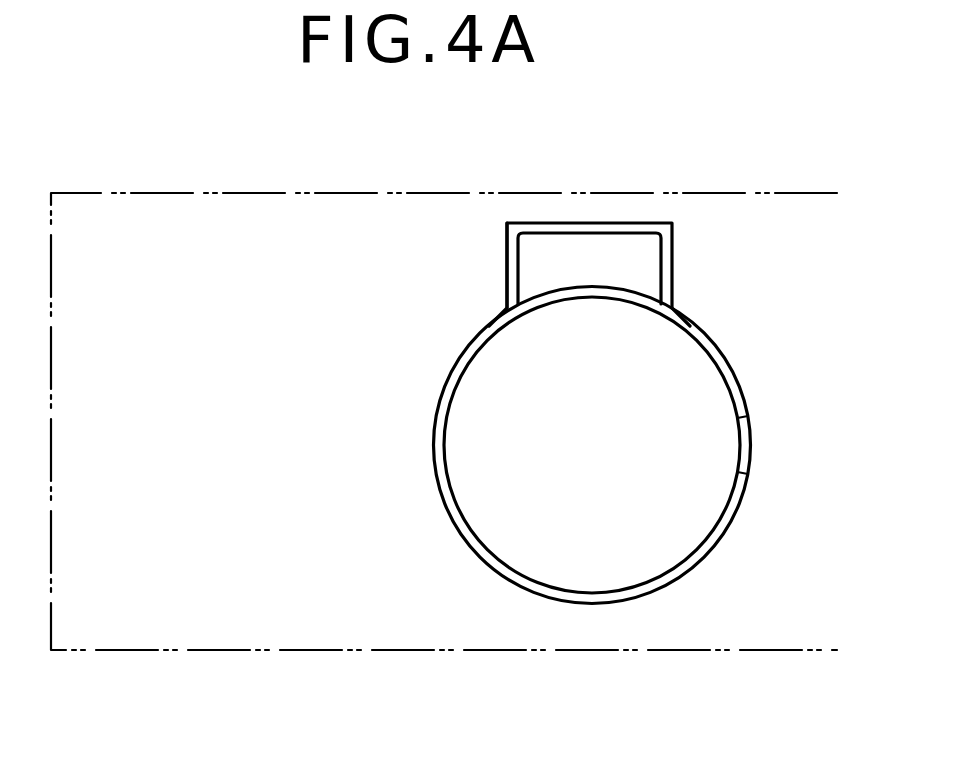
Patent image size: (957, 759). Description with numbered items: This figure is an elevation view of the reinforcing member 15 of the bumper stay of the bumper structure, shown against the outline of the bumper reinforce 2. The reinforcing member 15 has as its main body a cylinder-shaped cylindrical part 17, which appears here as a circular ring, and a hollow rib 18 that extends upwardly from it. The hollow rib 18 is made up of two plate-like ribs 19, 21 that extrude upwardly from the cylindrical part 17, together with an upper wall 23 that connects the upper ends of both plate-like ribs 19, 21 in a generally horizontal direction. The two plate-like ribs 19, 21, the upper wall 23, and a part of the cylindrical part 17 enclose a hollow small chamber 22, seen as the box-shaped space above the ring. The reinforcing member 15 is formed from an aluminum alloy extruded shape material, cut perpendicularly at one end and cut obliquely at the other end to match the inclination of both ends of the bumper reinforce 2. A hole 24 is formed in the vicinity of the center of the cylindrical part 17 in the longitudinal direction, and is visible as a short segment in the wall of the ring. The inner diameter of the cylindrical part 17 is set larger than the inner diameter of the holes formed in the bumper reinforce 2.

The bumper reinforce 2 is at (178, 230).
The reinforcing member 15 is at (609, 355).
The cylindrical part 17 is at (440, 512).
The hollow rib 18 is at (562, 216).
The plate-like rib 19 is at (512, 285).
The plate-like rib 21 is at (667, 266).
The hollow small chamber 22 is at (605, 250).
The upper wall 23 is at (541, 228).
The hole 24 is at (745, 440).